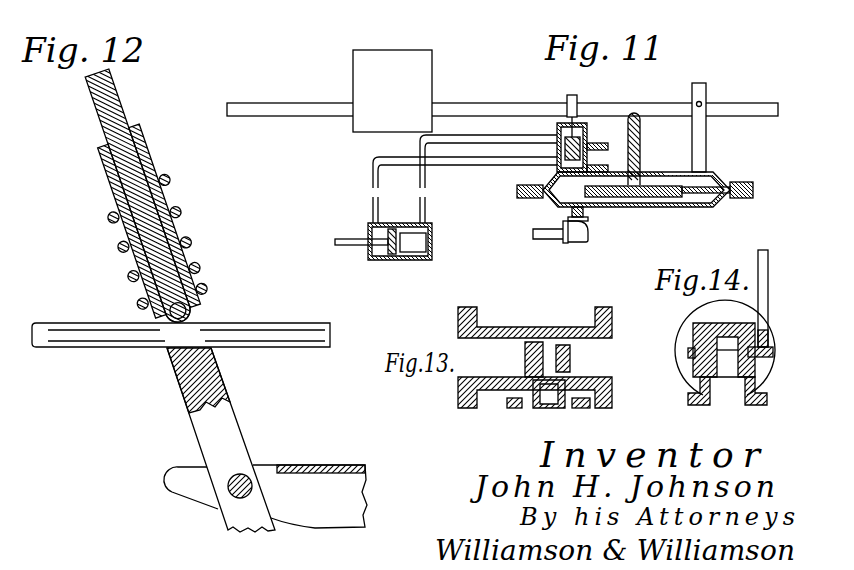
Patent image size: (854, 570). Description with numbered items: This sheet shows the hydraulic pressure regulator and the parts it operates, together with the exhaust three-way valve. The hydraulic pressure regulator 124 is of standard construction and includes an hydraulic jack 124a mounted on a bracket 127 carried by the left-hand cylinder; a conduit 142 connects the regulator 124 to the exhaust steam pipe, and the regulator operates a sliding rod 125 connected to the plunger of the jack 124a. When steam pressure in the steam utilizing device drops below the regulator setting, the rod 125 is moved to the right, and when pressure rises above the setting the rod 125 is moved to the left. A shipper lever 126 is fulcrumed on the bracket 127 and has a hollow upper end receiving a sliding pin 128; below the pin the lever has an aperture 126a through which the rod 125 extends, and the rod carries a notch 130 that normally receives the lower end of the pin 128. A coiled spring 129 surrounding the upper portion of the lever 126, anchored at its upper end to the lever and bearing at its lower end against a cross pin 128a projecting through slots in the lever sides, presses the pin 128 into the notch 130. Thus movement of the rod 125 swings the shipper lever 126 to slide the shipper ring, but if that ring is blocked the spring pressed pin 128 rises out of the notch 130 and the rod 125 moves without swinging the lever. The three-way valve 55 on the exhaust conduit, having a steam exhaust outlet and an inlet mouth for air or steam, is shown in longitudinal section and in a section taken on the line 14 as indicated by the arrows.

In FIG. 13, the section line 14 is at (548, 425).
In FIG. 13, the three-way valve 55 is at (498, 392).
In FIG. 14, the three-way valve 55 is at (762, 380).
In FIG. 11, the hydraulic pressure regulator 124 is at (529, 185).
In FIG. 11, the hydraulic jack 124a is at (404, 262).
In FIG. 12, the sliding rod 125 is at (276, 347).
In FIG. 11, the sliding rod 125 is at (357, 239).
In FIG. 12, the shipper lever 126 is at (236, 437).
In FIG. 12, the aperture 126a is at (173, 357).
In FIG. 12, the bracket 127 is at (318, 465).
In FIG. 12, the sliding pin 128 is at (105, 120).
In FIG. 12, the cross pin 128a is at (196, 309).
In FIG. 12, the coiled spring 129 is at (105, 219).
In FIG. 12, the notch 130 is at (173, 335).
In FIG. 11, the conduit 142 is at (543, 240).